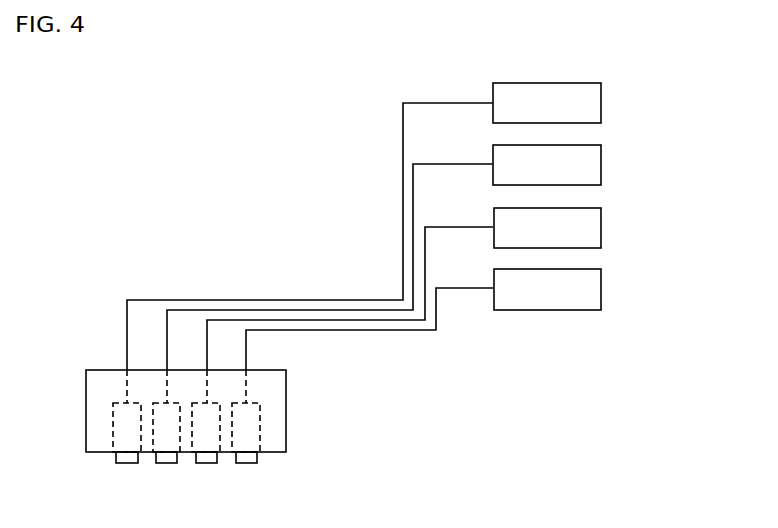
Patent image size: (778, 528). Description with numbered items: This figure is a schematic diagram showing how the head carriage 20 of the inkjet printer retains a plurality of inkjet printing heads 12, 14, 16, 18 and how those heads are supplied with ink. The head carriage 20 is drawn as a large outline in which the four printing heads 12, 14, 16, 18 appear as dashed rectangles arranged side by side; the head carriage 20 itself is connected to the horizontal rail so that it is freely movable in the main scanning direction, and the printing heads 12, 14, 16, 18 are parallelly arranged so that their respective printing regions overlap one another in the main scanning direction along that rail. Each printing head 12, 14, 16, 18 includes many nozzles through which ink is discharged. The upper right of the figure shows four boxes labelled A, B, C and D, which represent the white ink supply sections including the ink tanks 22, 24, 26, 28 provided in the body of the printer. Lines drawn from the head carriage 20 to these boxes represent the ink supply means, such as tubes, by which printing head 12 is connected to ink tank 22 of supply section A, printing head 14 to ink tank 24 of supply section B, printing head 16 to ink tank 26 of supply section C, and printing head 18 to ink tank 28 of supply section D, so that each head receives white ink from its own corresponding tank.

The inkjet printing head 12 is at (247, 463).
The inkjet printing head 14 is at (207, 463).
The inkjet printing head 16 is at (167, 463).
The inkjet printing head 18 is at (125, 463).
The head carriage 20 is at (281, 409).
The ink tank 22 is at (588, 296).
The ink tank 24 is at (587, 234).
The ink tank 26 is at (588, 173).
The ink tank 28 is at (585, 110).